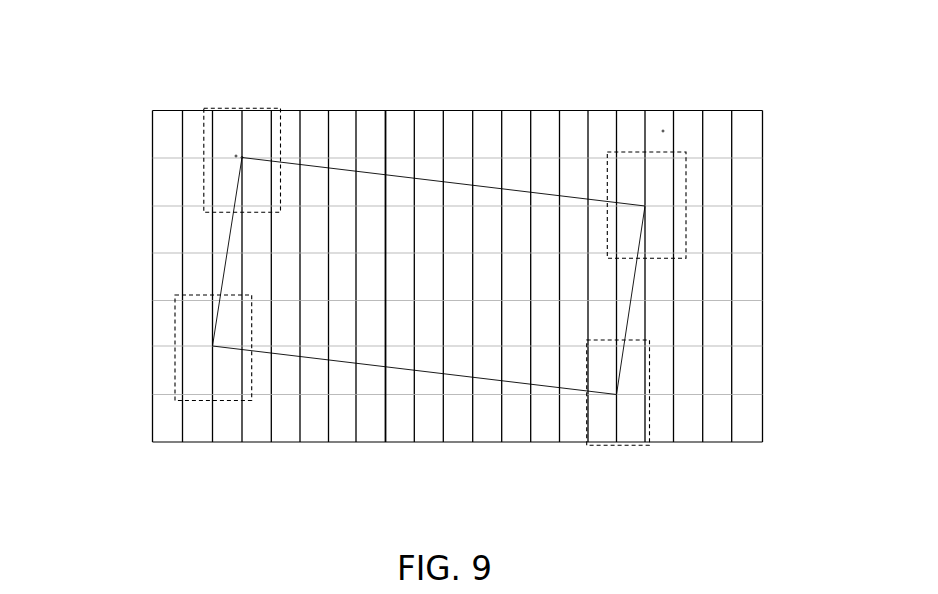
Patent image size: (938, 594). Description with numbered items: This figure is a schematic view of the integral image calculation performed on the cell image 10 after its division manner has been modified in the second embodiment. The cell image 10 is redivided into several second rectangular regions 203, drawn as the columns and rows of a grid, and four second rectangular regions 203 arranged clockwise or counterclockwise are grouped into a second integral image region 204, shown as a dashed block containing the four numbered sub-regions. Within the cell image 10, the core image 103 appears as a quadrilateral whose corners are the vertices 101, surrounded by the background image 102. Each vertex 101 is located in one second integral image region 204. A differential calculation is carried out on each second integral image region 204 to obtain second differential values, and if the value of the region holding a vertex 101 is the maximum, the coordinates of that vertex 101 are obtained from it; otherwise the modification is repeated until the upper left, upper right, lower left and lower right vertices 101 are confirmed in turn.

The cell image 10 is at (503, 110).
The vertex 101 is at (242, 157).
The background image 102 is at (663, 130).
The core image 103 is at (371, 172).
The second rectangular region 203 is at (222, 152).
The second integral image region 204 is at (256, 107).